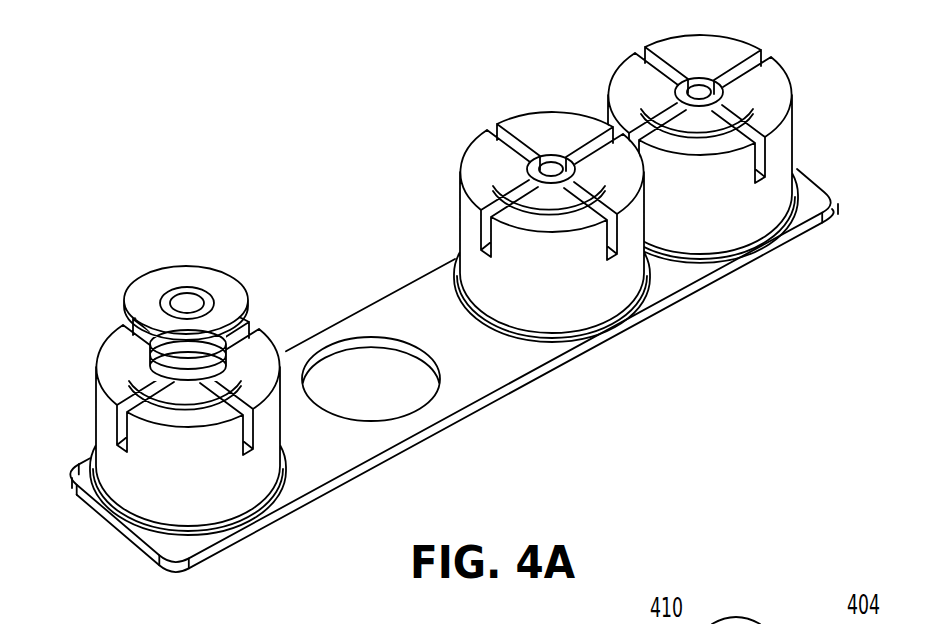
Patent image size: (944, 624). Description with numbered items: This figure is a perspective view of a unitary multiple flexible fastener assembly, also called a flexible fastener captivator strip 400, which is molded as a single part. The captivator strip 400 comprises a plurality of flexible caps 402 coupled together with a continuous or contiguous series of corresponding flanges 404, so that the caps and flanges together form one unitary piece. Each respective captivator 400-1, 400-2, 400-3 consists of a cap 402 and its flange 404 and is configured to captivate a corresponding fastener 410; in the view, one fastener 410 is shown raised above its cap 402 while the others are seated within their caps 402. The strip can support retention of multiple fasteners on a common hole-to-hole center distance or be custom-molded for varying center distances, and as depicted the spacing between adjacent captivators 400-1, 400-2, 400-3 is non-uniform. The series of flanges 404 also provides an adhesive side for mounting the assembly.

The flexible fastener captivator strip 400 is at (192, 180).
The captivator 400-1 is at (227, 505).
The captivator 400-2 is at (472, 160).
The captivator 400-3 is at (708, 45).
The flexible cap 402 is at (441, 295).
The flange 404 is at (192, 547).
The fastener 410 is at (214, 292).